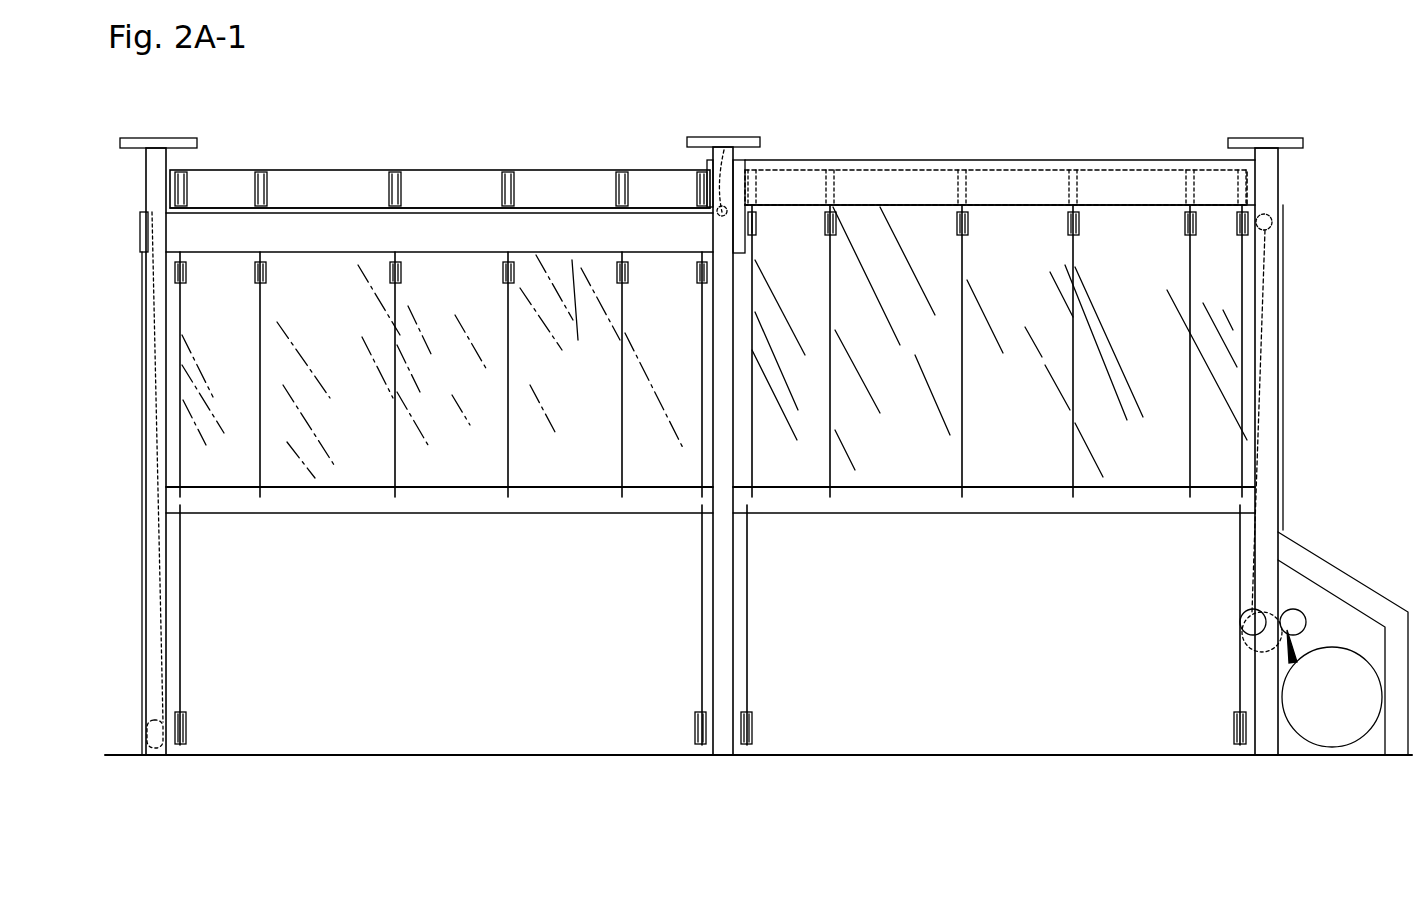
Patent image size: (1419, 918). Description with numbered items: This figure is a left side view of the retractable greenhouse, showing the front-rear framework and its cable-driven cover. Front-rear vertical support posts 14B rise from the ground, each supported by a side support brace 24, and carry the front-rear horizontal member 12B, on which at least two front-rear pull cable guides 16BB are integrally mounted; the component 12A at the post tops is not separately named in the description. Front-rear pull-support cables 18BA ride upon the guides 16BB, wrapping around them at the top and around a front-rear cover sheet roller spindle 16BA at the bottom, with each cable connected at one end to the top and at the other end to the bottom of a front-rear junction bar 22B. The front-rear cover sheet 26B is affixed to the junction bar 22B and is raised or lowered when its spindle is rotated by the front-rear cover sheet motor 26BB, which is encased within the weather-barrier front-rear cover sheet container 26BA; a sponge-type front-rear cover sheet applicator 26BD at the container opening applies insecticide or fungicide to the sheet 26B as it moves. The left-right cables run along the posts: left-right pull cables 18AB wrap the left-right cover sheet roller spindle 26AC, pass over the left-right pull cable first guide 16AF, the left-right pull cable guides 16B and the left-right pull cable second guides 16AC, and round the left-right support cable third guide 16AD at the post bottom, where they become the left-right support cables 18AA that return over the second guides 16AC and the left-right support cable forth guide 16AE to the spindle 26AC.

The post cap plate 12A is at (148, 185).
The front-rear horizontal member 12B is at (422, 182).
The front-rear vertical support post 14B is at (165, 752).
The left-right pull cable second guide 16AC is at (146, 212).
The left-right support cable third guide 16AD is at (147, 748).
The left-right support cable forth guide 16AE is at (1245, 612).
The left-right pull cable first guide 16AF is at (1285, 628).
The left-right pull cable guide 16B is at (1272, 220).
The front-rear cover sheet roller spindle 16BA is at (253, 265).
The front-rear pull cable guide 16BB is at (263, 168).
The left-right support cable 18AA is at (147, 480).
The left-right pull cable 18AB is at (1280, 412).
The front-rear pull-support cable 18BA is at (182, 483).
The front-rear junction bar 22B is at (395, 515).
The side support brace 24 is at (1372, 592).
The left-right cover sheet roller spindle 26AC is at (1338, 732).
The front-rear cover sheet 26B is at (714, 342).
The front-rear cover sheet container 26BA is at (545, 210).
The front-rear cover sheet motor 26BB is at (587, 313).
The front-rear cover sheet applicator 26BD is at (340, 212).